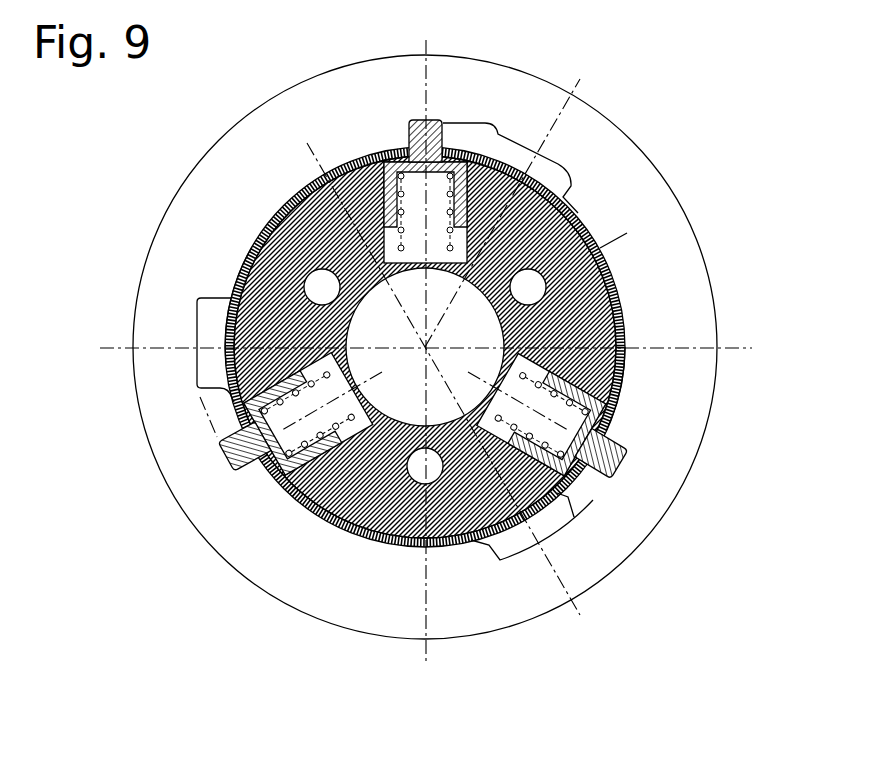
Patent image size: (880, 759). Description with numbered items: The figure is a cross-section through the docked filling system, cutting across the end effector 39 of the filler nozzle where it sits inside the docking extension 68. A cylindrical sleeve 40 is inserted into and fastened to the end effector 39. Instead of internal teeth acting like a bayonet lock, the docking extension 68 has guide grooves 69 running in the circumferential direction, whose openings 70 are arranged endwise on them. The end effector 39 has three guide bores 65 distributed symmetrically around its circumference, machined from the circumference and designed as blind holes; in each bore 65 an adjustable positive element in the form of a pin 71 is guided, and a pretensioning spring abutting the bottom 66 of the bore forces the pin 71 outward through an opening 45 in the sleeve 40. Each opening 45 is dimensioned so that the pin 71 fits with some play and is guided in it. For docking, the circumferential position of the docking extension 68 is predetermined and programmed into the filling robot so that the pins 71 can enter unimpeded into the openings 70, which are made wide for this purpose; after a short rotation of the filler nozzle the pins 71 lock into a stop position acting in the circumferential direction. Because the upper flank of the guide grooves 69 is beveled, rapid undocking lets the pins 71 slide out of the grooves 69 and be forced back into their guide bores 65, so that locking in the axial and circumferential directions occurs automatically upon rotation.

The end effector 39 is at (587, 303).
The cylindrical sleeve 40 is at (617, 385).
The opening 45 is at (610, 435).
The guide bores 65 is at (307, 200).
The bottom of the bore 66 is at (243, 272).
The docking extension 68 is at (647, 190).
The guide grooves 69 is at (467, 133).
The openings 70 is at (550, 182).
The pins 71 is at (413, 133).